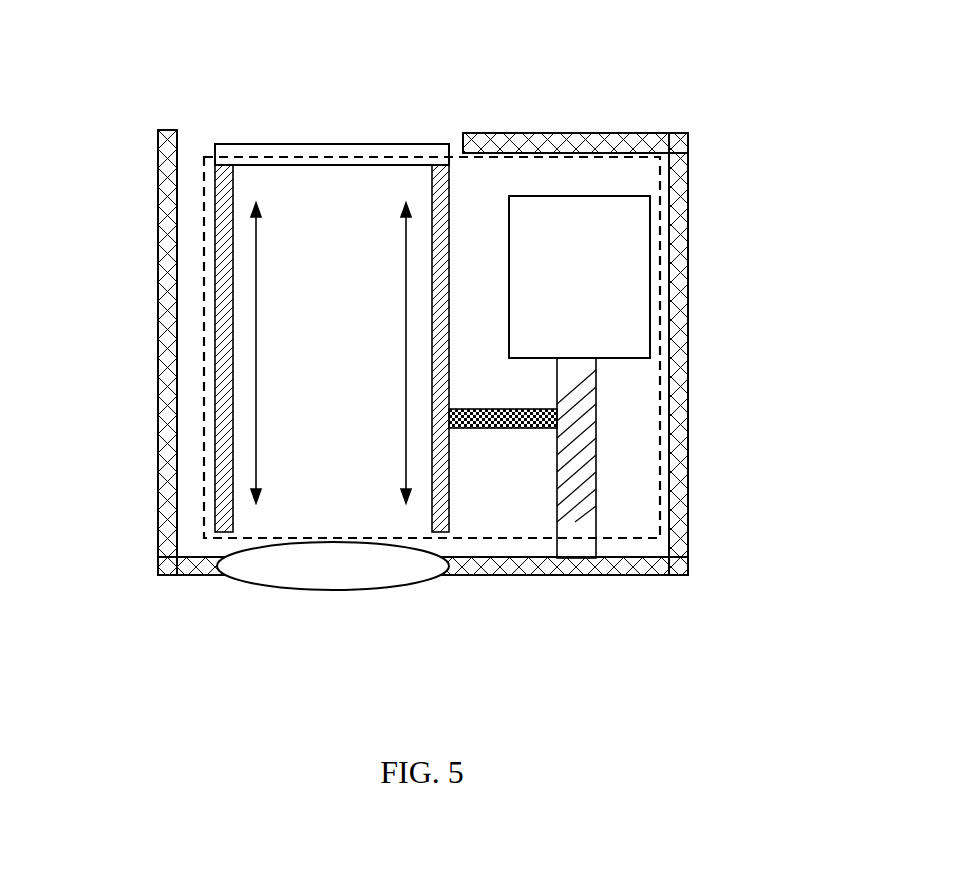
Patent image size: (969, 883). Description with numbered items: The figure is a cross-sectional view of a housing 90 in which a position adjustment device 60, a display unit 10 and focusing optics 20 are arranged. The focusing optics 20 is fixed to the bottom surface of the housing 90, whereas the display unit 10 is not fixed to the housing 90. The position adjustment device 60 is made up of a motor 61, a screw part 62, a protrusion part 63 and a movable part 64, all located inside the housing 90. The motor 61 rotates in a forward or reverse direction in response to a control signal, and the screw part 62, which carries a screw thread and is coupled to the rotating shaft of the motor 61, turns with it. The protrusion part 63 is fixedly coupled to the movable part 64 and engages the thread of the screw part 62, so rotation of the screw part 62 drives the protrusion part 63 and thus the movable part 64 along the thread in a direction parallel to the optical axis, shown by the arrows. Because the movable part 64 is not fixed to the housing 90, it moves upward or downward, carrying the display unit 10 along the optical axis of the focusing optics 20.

The display unit 10 is at (333, 144).
The focusing optics 20 is at (280, 590).
The position adjustment device 60 is at (661, 200).
The motor 61 is at (651, 277).
The screw part 62 is at (596, 520).
The protrusion part 63 is at (540, 428).
The movable part 64 is at (212, 203).
The housing 90 is at (658, 576).